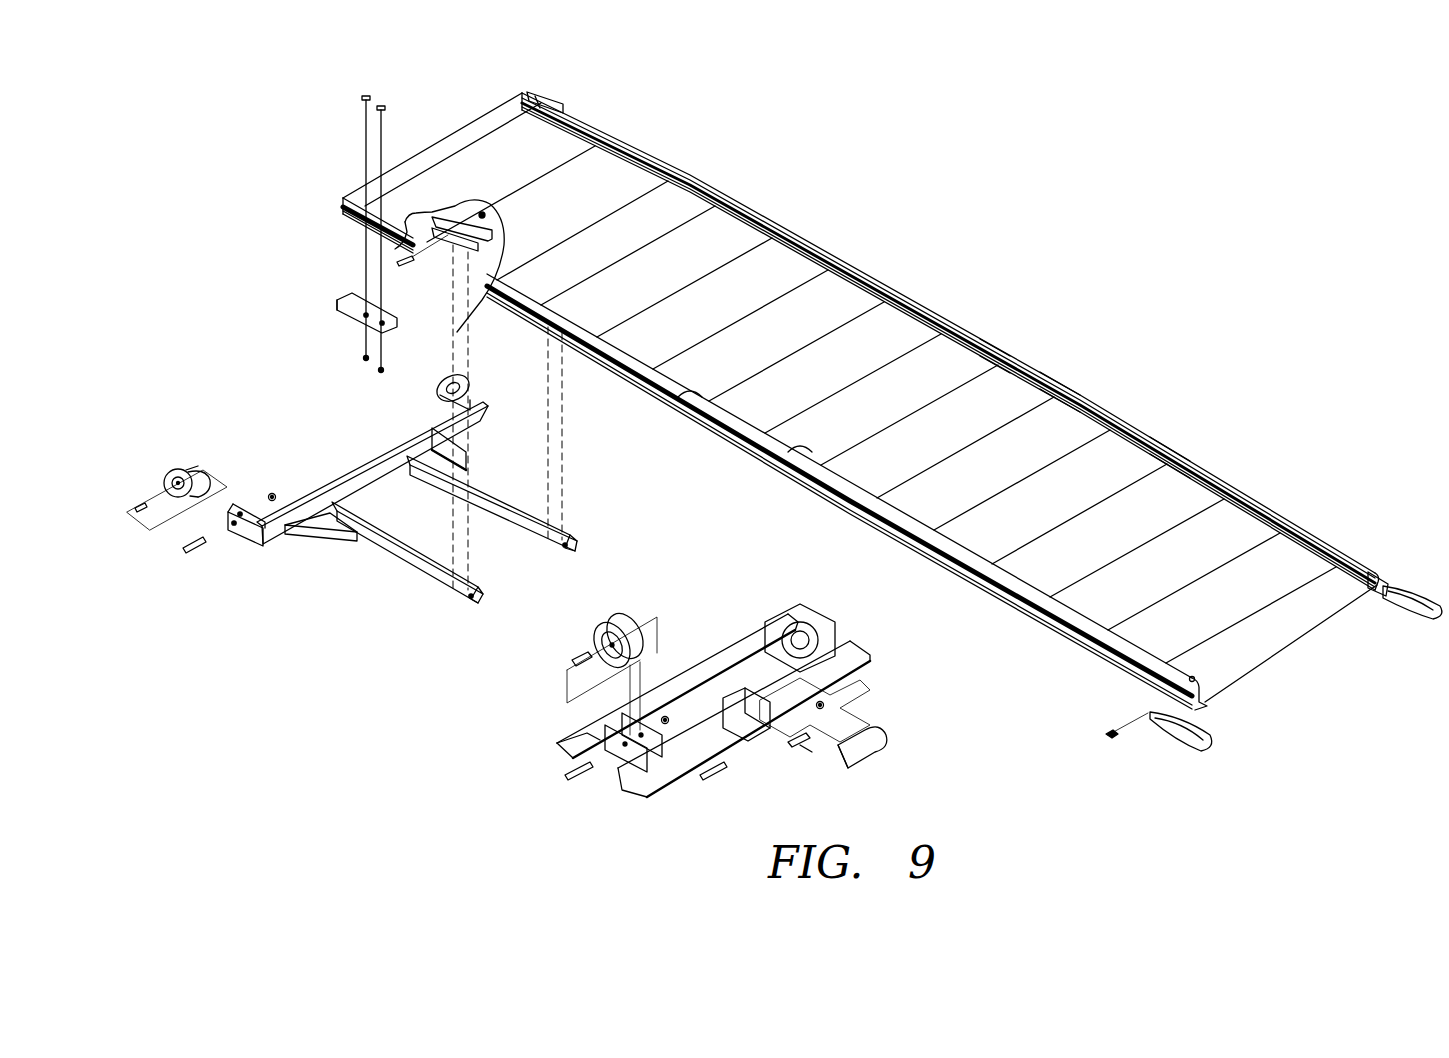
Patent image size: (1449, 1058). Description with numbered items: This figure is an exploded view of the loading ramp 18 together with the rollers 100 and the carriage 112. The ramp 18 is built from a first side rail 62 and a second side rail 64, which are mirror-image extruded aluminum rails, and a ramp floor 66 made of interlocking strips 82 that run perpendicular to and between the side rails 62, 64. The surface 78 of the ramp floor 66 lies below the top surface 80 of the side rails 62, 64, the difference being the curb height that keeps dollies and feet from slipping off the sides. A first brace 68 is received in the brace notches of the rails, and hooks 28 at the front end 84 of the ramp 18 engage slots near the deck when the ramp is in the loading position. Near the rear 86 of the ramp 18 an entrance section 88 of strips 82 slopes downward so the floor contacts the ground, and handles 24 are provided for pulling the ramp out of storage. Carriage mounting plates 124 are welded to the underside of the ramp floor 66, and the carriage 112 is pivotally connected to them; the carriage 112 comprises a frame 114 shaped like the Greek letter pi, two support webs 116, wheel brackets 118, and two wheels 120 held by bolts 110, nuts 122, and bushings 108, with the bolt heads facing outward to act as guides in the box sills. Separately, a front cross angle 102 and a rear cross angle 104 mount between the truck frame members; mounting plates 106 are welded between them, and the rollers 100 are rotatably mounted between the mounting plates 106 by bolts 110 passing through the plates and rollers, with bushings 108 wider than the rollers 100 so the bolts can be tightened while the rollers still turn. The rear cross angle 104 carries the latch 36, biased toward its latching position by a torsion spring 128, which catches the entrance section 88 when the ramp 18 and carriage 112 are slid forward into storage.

The loading ramp 18 is at (957, 207).
The handles 24 is at (1418, 618).
The hooks 28 is at (500, 100).
The latch 36 is at (880, 740).
The first side rail 62 is at (682, 400).
The second side rail 64 is at (1058, 360).
The ramp floor 66 is at (1170, 425).
The first brace 68 is at (393, 250).
The surface of the ramp floor 78 is at (1290, 495).
The top surface of the side rails 80 is at (1000, 330).
The interlocking strips 82 is at (1355, 520).
The front end of the ramp 84 is at (432, 135).
The rear of the ramp 86 is at (1292, 655).
The entrance section 88 is at (1380, 578).
The rollers 100 is at (598, 622).
The front cross angle 102 is at (726, 654).
The rear cross angle 104 is at (855, 658).
The mounting plates 106 is at (600, 733).
The bushings 108 is at (570, 660).
The bolts 110 is at (710, 815).
The carriage 112 is at (374, 548).
The carriage frame 114 is at (352, 475).
The support webs 116 is at (455, 450).
The wheel brackets 118 is at (236, 505).
The wheels 120 is at (462, 380).
The nuts 122 is at (276, 495).
The carriage mounting plates 124 is at (470, 248).
The torsion spring 128 is at (793, 748).